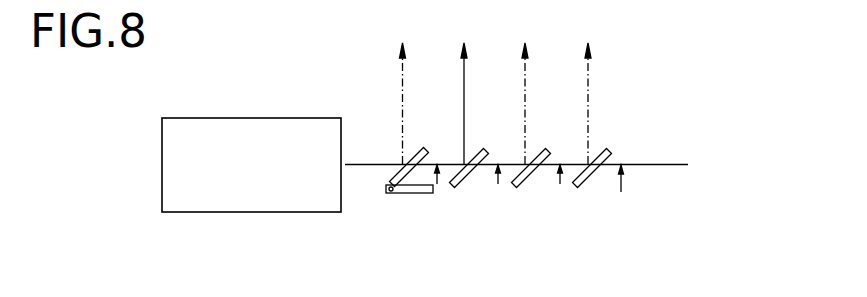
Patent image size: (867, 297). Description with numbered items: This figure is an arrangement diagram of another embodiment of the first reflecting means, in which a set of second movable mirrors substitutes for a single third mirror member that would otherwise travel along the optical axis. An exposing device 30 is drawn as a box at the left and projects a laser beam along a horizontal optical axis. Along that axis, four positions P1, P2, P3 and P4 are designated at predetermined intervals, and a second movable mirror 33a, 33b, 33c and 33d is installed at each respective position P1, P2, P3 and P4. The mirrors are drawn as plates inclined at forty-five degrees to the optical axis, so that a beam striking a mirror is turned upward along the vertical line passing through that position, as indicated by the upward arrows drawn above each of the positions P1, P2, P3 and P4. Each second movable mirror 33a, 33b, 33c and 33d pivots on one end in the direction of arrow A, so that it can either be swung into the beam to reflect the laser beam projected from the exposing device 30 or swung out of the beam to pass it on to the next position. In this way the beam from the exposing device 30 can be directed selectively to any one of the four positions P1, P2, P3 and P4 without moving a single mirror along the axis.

The exposing device 30 is at (162, 157).
The second movable mirror 33a is at (408, 193).
The second movable mirror 33b is at (457, 177).
The second movable mirror 33c is at (520, 178).
The second movable mirror 33d is at (582, 178).
The first position P1 is at (403, 164).
The second position P2 is at (464, 164).
The third position P3 is at (525, 164).
The fourth position P4 is at (588, 164).
The arrow A is at (622, 177).